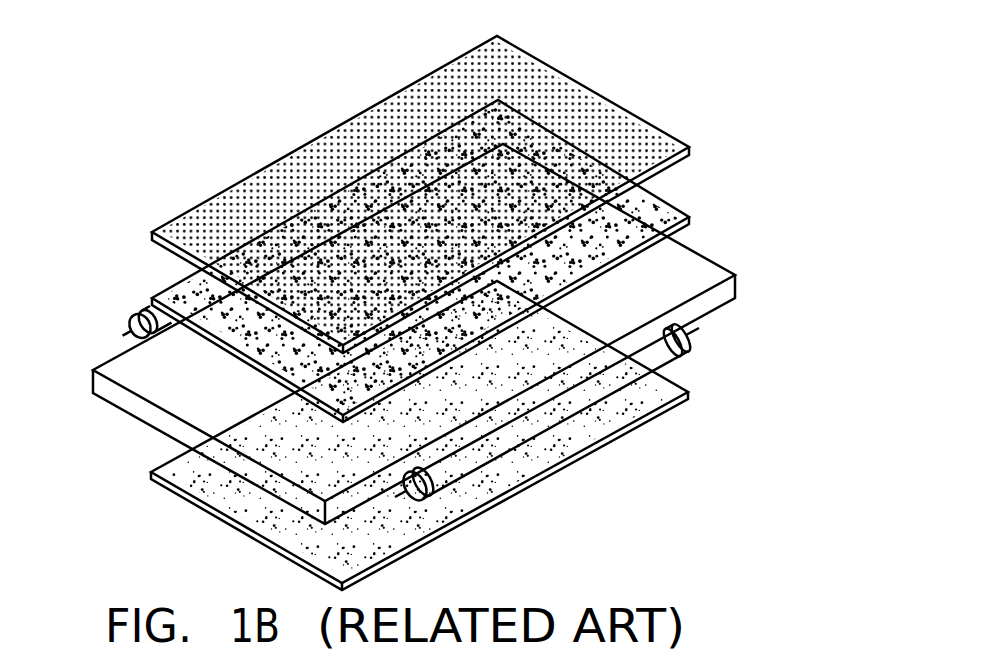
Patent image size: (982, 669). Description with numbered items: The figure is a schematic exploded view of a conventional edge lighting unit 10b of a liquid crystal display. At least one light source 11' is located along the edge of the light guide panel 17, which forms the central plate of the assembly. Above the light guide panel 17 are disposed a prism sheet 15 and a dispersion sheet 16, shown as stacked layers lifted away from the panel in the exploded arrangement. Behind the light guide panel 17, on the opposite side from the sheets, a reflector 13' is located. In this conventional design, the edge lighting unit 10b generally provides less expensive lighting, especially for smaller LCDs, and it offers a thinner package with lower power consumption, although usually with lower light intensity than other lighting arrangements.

The edge lighting unit 10b is at (108, 60).
The light source 11' is at (372, 394).
The reflector 13' is at (417, 438).
The prism sheet 15 is at (676, 207).
The dispersion sheet 16 is at (627, 110).
The light guide panel 17 is at (117, 395).